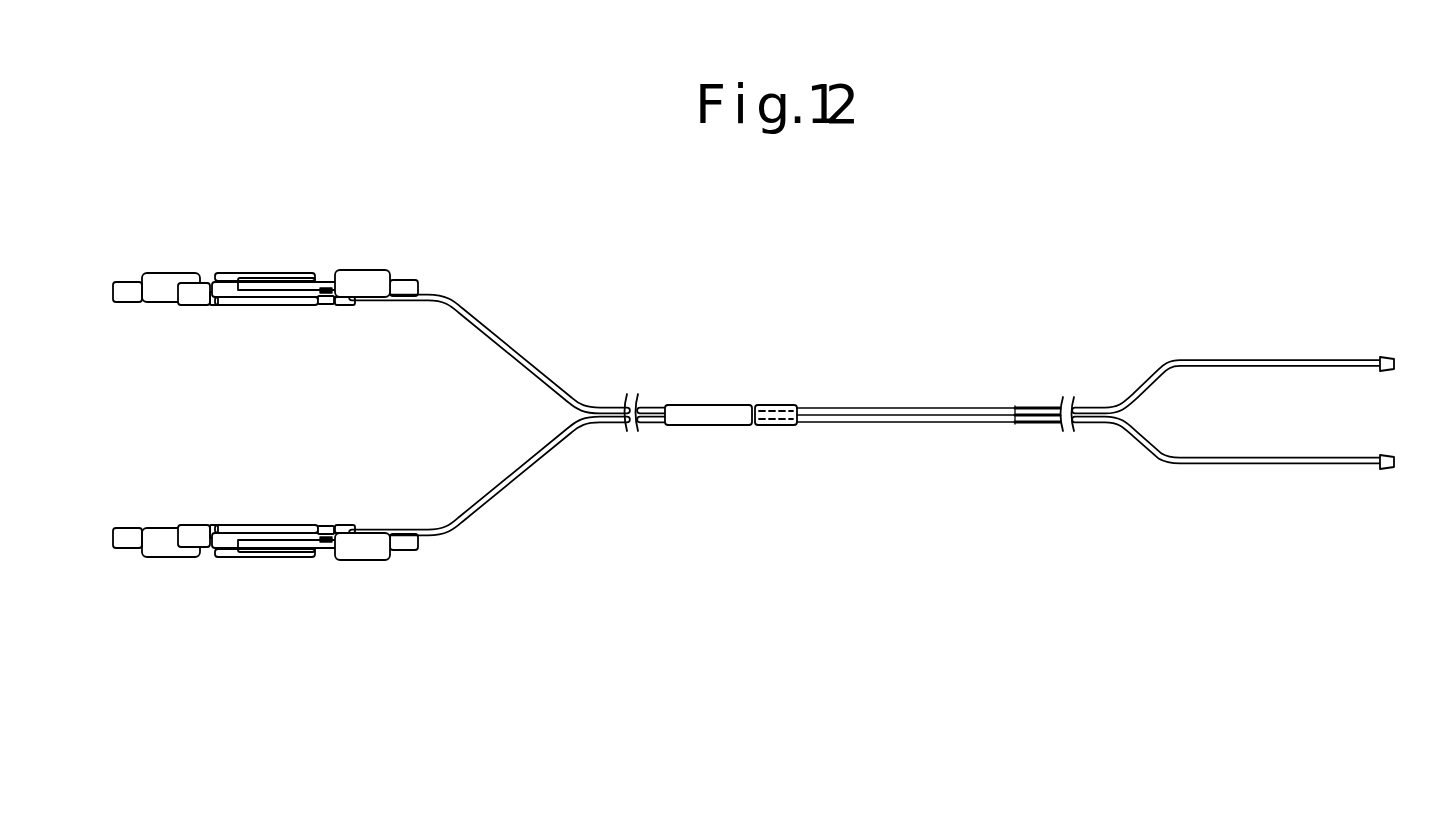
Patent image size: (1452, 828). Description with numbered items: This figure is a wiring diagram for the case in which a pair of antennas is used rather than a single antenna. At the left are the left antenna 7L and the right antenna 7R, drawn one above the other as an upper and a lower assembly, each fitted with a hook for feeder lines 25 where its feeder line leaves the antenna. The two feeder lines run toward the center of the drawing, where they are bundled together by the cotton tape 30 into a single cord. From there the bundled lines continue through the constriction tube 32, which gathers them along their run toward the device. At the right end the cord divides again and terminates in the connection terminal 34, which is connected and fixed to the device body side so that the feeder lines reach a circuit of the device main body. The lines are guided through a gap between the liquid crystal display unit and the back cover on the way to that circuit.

The right antenna 7R is at (375, 278).
The left antenna 7L is at (378, 550).
The hook for feeder lines 25 is at (322, 300).
The cotton tape 30 is at (703, 426).
The constriction tube 32 is at (928, 403).
The connection terminal 34 is at (1397, 362).